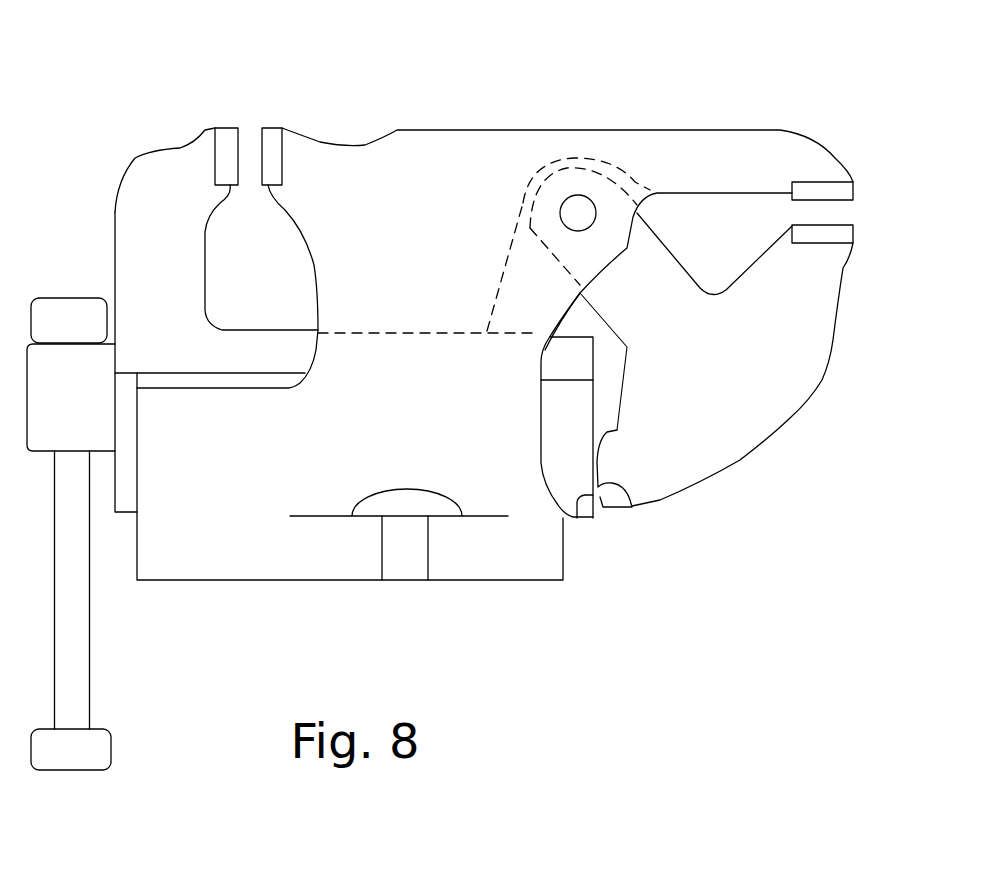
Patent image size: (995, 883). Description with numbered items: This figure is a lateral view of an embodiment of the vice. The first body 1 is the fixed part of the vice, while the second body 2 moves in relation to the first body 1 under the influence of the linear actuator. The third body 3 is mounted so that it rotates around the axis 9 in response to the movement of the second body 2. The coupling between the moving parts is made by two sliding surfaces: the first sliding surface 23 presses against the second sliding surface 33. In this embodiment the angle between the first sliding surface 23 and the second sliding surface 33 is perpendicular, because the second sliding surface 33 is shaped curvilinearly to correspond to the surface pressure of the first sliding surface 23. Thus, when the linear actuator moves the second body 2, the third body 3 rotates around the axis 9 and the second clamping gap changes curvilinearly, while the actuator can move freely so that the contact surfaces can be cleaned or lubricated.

The first body 1 is at (433, 205).
The second body 2 is at (148, 222).
The third body 3 is at (762, 377).
The axis 9 is at (579, 212).
The first sliding surface 23 is at (577, 520).
The second sliding surface 33 is at (626, 498).